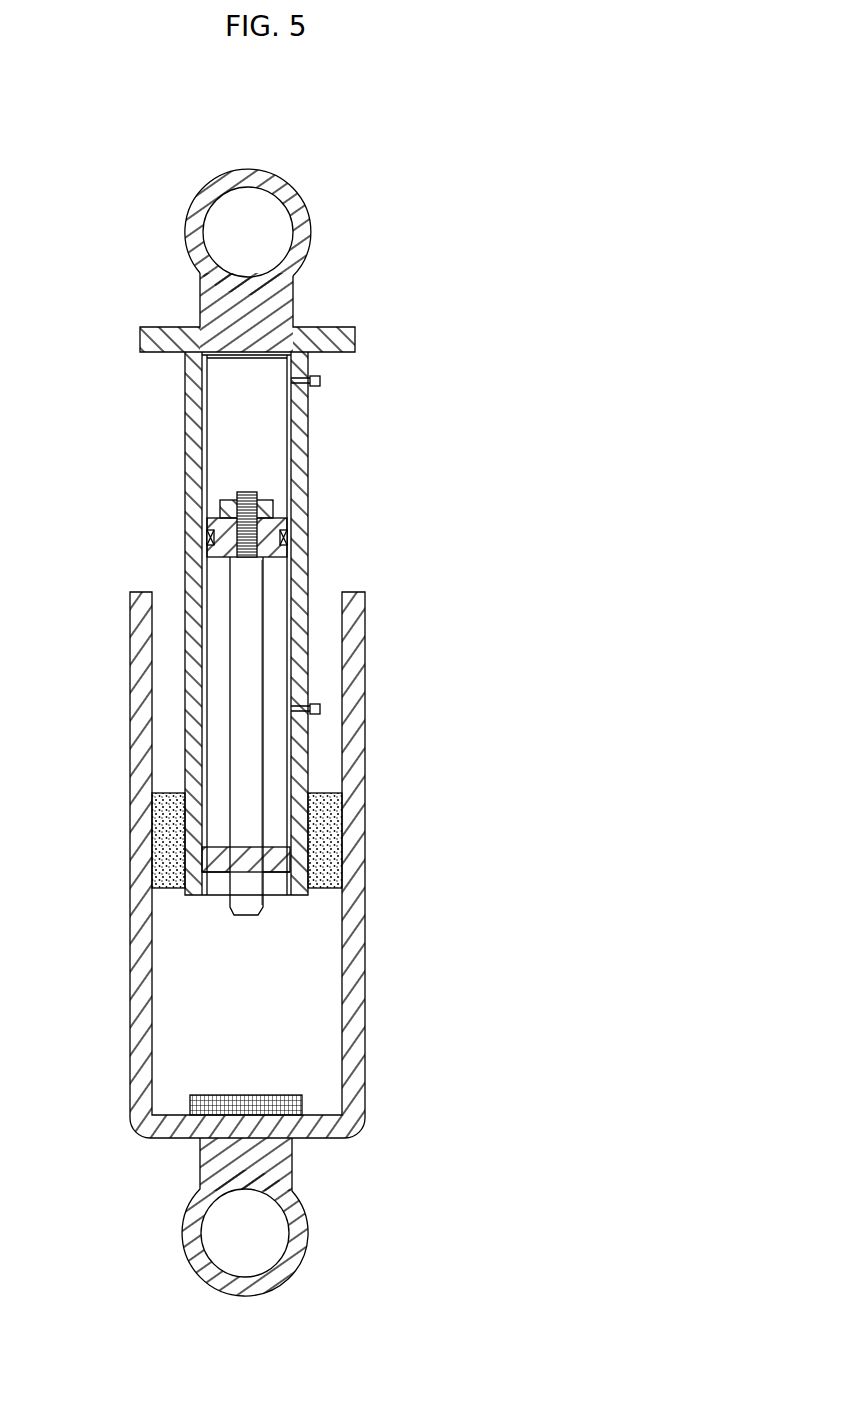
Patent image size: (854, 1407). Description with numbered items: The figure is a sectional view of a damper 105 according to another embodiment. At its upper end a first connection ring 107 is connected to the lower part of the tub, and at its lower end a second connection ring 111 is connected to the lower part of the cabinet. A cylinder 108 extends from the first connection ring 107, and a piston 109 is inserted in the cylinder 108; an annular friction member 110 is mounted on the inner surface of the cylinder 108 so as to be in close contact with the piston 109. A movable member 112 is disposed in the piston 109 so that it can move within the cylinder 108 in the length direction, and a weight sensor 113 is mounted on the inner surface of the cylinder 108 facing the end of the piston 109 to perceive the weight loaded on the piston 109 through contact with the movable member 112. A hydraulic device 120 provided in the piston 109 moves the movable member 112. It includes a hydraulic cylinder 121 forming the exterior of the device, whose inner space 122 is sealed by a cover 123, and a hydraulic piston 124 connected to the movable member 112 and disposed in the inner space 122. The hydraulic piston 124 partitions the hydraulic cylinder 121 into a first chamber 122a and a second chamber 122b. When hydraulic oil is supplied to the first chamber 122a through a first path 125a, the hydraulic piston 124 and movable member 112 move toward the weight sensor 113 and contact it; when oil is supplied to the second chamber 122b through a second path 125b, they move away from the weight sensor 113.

The damper 105 is at (452, 177).
The first connection ring 107 is at (308, 213).
The cylinder 108 is at (138, 660).
The piston 109 is at (192, 448).
The friction member 110 is at (157, 827).
The second connection ring 111 is at (307, 1228).
The movable member 112 is at (240, 720).
The weight sensor 113 is at (190, 1097).
The hydraulic device 120 is at (328, 364).
The hydraulic cylinder 121 is at (200, 326).
The inner space 122 is at (223, 372).
The first chamber 122a is at (263, 457).
The second chamber 122b is at (272, 637).
The cover 123 is at (202, 856).
The hydraulic piston 124 is at (275, 519).
The first path 125a is at (320, 384).
The second path 125b is at (320, 710).